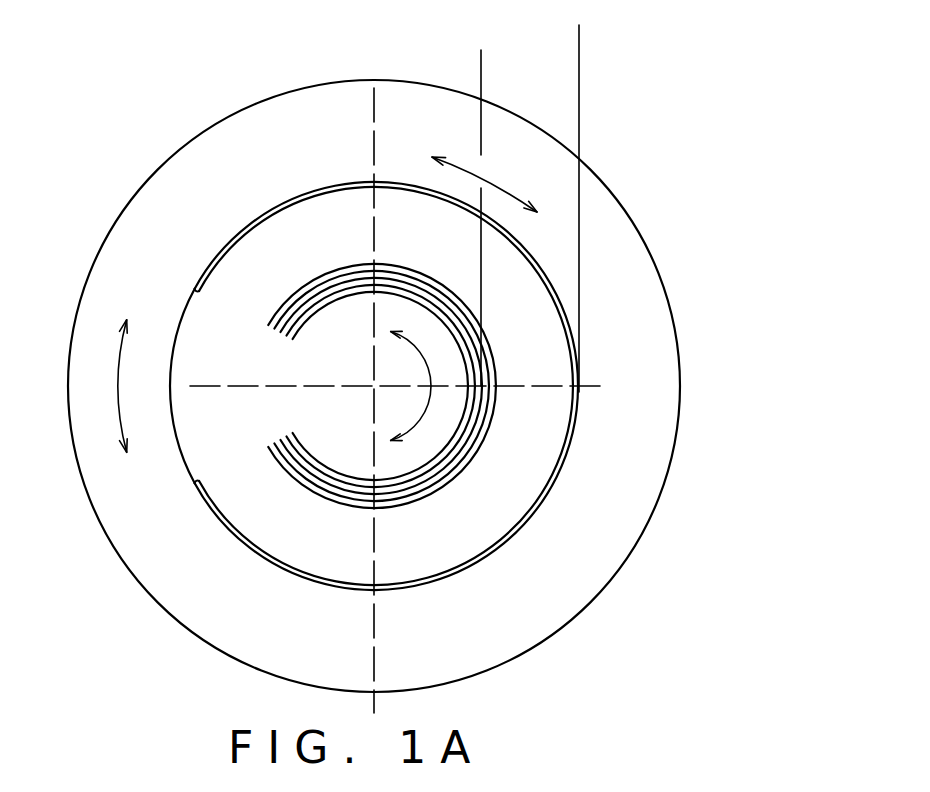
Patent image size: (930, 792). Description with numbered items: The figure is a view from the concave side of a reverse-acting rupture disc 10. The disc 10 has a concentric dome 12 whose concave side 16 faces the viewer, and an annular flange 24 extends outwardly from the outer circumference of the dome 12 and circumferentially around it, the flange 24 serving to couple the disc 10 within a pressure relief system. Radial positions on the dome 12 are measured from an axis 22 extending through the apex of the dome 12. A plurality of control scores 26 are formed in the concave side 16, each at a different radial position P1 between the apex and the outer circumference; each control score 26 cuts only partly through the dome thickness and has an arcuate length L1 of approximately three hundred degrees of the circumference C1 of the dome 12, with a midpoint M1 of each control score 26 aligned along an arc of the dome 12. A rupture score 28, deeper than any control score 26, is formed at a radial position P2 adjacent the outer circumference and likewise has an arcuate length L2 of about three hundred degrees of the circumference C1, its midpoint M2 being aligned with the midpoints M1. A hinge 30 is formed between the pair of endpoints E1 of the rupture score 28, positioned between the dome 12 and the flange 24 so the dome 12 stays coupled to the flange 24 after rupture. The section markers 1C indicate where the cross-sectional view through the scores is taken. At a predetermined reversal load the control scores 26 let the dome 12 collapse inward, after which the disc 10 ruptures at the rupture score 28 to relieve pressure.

The reverse-acting rupture disc 10 is at (623, 150).
The concentric dome 12 is at (296, 242).
The concave side 16 is at (256, 515).
The axis 22 is at (376, 614).
The annular flange 24 is at (635, 260).
The control score 26 is at (404, 512).
The rupture score 28 is at (526, 527).
The hinge 30 is at (172, 418).
The endpoints of the rupture score E1 is at (193, 300).
The circumference of the dome C1 is at (117, 387).
The arcuate length of the control score L1 is at (412, 404).
The arcuate length of the rupture score L2 is at (490, 180).
The midpoint of the control score M1 is at (498, 387).
The midpoint of the rupture score M2 is at (580, 393).
The radial position of the control score P1 is at (481, 62).
The radial position of the rupture score P2 is at (374, 32).
The section line 1C is at (447, 388).